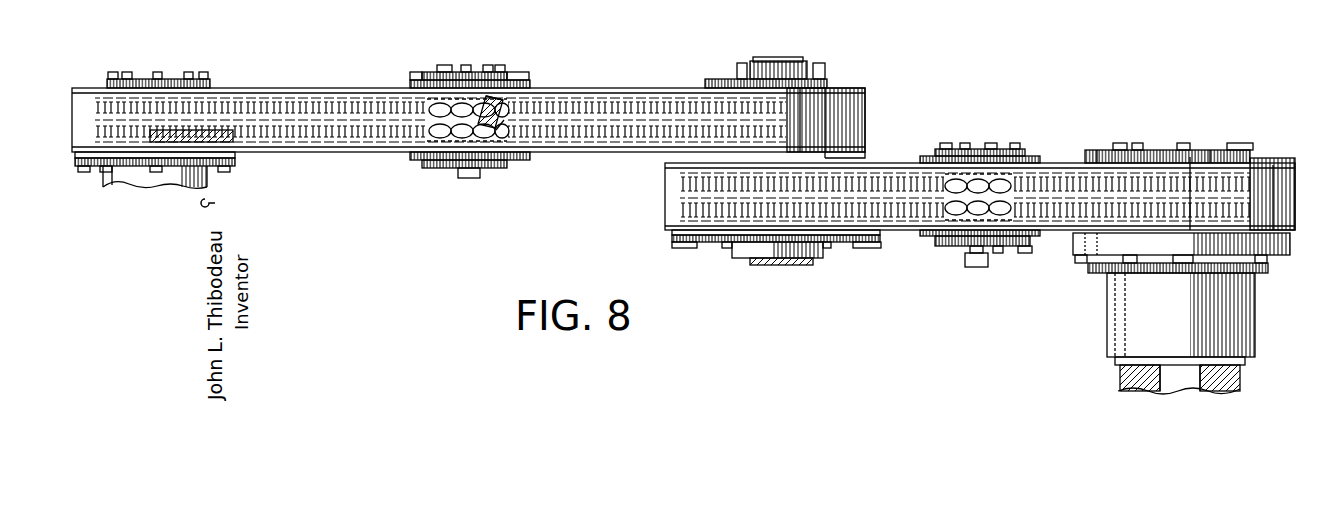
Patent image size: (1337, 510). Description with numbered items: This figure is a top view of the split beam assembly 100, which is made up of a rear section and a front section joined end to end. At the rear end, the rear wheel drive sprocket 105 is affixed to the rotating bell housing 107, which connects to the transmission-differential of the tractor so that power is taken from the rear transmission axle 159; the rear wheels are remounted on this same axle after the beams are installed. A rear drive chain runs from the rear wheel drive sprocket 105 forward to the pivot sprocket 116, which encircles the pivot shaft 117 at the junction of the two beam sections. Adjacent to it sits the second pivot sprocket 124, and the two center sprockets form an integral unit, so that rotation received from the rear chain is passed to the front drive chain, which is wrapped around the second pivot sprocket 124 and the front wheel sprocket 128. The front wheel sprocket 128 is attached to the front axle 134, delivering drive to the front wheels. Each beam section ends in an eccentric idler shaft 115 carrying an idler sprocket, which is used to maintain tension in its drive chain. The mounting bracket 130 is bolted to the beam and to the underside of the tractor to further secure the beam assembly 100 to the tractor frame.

The beam assembly 100 is at (870, 270).
The rear wheel drive sprocket 105 is at (1192, 188).
The rotating bell housing 107 is at (1232, 321).
The eccentric idler shaft 115 is at (470, 180).
The pivot sprocket 116 is at (757, 208).
The pivot shaft 117 is at (773, 265).
The second pivot sprocket 124 is at (757, 122).
The front wheel sprocket 128 is at (173, 123).
The mounting bracket 130 is at (817, 35).
The front axle 134 is at (140, 82).
The rear transmission axle 159 is at (1160, 152).